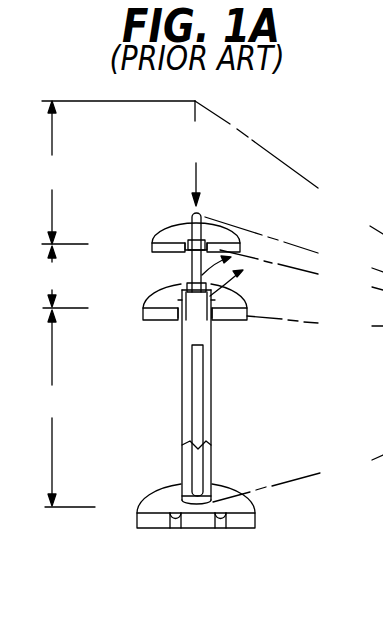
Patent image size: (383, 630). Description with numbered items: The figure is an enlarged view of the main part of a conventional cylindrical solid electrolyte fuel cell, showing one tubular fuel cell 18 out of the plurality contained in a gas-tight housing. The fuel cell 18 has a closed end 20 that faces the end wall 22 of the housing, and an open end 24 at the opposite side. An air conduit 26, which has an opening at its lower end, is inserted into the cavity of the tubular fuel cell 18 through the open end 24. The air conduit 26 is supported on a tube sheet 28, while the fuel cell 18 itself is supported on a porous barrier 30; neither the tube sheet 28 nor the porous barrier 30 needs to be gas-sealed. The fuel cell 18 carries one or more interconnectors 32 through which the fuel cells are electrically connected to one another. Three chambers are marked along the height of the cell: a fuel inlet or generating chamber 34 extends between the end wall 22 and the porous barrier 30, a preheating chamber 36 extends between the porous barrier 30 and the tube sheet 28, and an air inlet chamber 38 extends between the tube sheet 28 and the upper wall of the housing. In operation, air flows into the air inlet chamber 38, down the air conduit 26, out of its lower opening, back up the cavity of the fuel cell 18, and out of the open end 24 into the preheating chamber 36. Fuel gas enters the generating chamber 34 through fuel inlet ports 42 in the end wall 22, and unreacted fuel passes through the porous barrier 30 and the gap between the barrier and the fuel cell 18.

The tubular fuel cell 18 is at (183, 397).
The closed end 20 is at (183, 492).
The end wall 22 is at (152, 500).
The open end 24 is at (178, 292).
The air conduit 26 is at (192, 268).
The tube sheet 28 is at (172, 235).
The porous barrier 30 is at (163, 300).
The interconnector 32 is at (197, 365).
The generating chamber 34 is at (63, 408).
The preheating chamber 36 is at (59, 277).
The air inlet chamber 38 is at (60, 172).
The fuel inlet port 42 is at (175, 523).